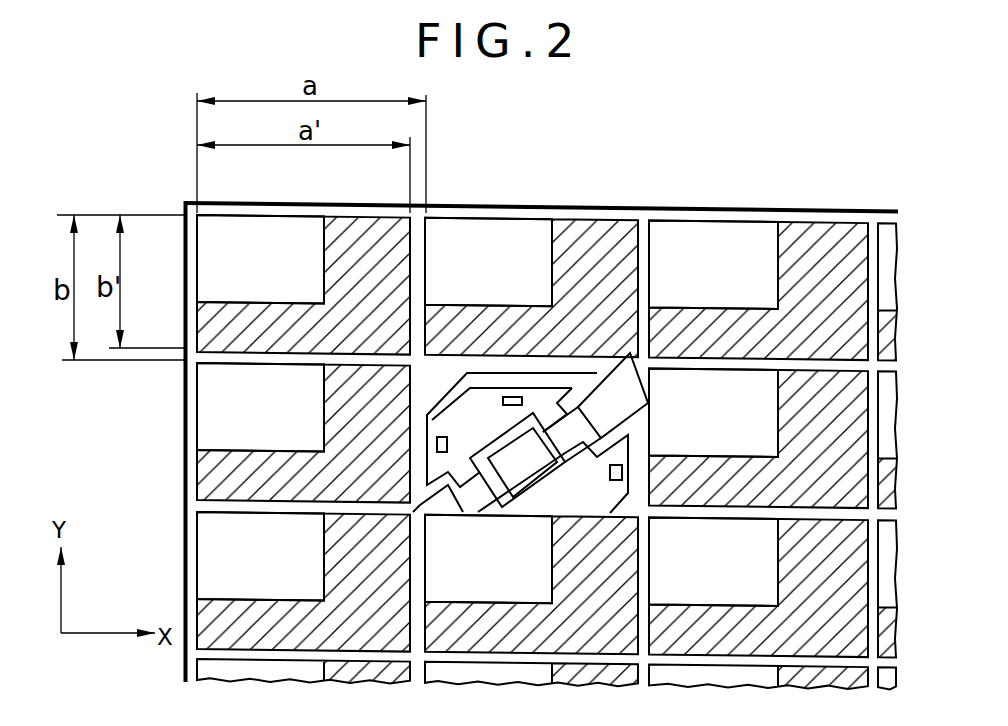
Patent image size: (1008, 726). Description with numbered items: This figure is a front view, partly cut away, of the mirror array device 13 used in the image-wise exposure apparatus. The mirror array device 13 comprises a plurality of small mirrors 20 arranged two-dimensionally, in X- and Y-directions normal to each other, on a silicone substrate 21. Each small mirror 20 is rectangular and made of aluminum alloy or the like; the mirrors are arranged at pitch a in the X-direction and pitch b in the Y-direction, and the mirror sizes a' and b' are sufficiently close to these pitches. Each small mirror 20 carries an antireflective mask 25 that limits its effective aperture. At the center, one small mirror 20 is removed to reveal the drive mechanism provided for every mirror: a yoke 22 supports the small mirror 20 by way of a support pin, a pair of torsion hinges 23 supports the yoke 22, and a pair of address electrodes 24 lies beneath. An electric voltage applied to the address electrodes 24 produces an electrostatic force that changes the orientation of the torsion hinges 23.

The mirror array device 13 is at (568, 143).
The small mirror 20 is at (362, 215).
The silicone substrate 21 is at (680, 207).
The yoke 22 is at (527, 480).
The torsion hinge 23 is at (579, 423).
The address electrode 24 is at (465, 415).
The antireflective mask 25 is at (346, 250).